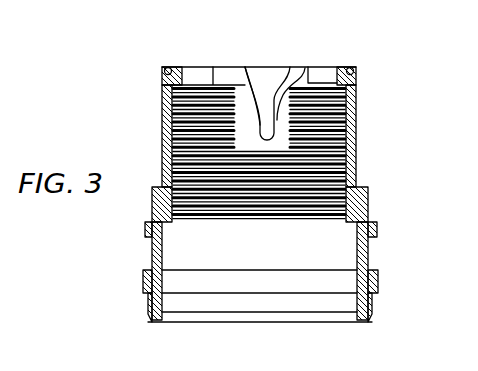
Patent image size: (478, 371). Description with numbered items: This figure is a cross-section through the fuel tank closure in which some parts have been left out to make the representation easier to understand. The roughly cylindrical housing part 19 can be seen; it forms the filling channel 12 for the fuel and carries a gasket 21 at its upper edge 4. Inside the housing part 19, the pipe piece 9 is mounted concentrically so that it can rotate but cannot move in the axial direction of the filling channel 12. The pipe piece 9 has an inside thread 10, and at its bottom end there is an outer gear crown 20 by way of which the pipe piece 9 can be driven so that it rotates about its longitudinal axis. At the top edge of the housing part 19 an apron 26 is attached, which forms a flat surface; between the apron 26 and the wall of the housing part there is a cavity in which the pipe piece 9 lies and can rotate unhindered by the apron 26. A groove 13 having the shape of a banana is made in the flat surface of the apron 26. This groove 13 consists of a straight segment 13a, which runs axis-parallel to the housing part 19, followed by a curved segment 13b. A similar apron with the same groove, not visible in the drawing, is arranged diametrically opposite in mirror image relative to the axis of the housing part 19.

The upper edge 4 is at (343, 66).
The gasket 21 is at (354, 70).
The apron 26 is at (240, 84).
The pipe piece 9 is at (347, 121).
The inside thread 10 is at (329, 168).
The groove 13 is at (265, 120).
The straight segment 13a is at (260, 128).
The curved segment 13b is at (291, 79).
The outer gear crown 20 is at (346, 202).
The housing part 19 is at (366, 243).
The filling channel 12 is at (305, 242).